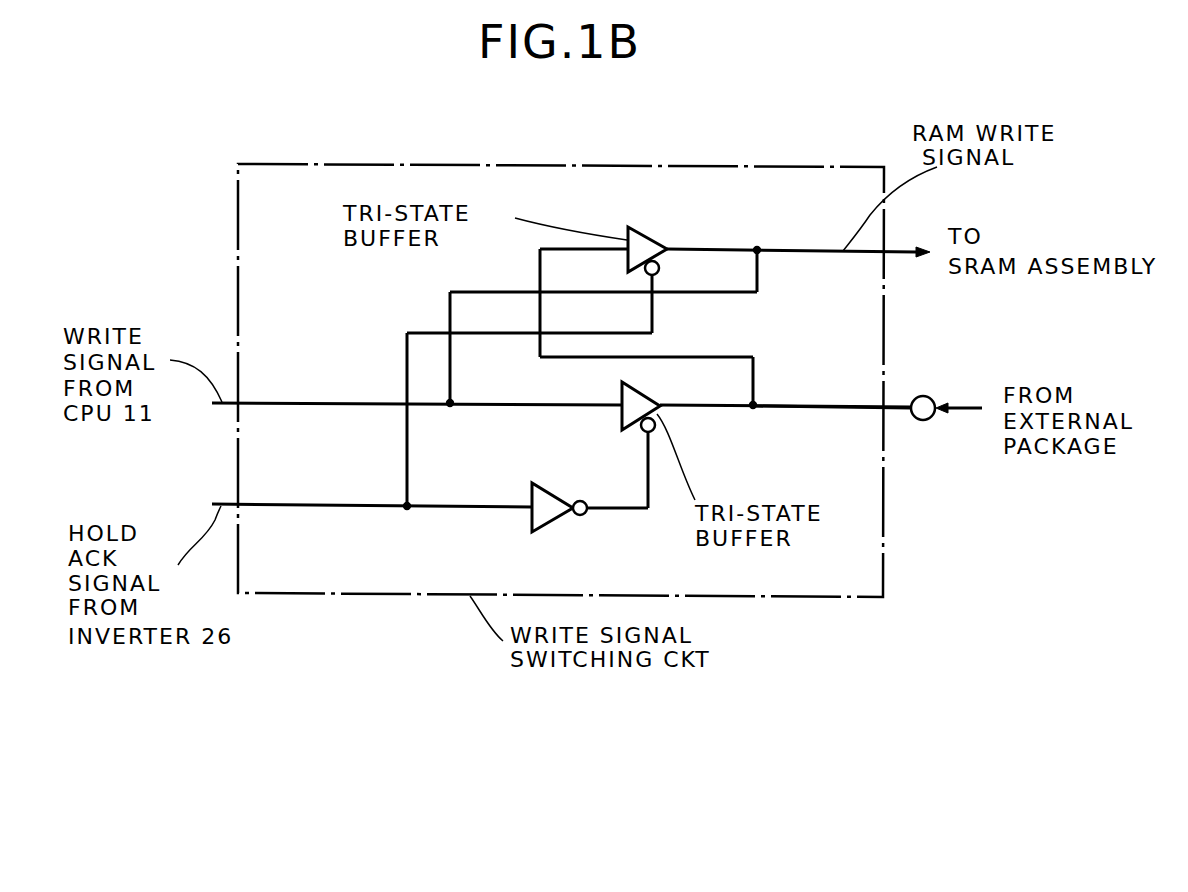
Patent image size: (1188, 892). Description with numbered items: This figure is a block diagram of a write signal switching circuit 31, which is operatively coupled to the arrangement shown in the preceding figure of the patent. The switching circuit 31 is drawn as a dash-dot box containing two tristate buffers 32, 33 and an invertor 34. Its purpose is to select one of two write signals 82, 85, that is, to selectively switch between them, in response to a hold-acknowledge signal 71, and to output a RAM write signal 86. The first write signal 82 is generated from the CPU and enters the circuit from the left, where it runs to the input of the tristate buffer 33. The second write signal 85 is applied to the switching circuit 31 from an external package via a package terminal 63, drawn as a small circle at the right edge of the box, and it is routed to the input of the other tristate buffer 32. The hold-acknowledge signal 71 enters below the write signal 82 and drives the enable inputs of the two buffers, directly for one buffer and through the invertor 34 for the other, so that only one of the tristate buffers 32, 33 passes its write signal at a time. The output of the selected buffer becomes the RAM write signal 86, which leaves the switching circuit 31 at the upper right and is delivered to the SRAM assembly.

The write signal switching circuit 31 is at (883, 566).
The tristate buffer 32 is at (649, 229).
The tristate buffer 33 is at (658, 410).
The invertor 34 is at (553, 521).
The package terminal 63 is at (927, 398).
The hold-acknowledge signal 71 is at (336, 506).
The write signal 82 is at (326, 403).
The write signal 85 is at (805, 406).
The RAM write signal 86 is at (793, 250).